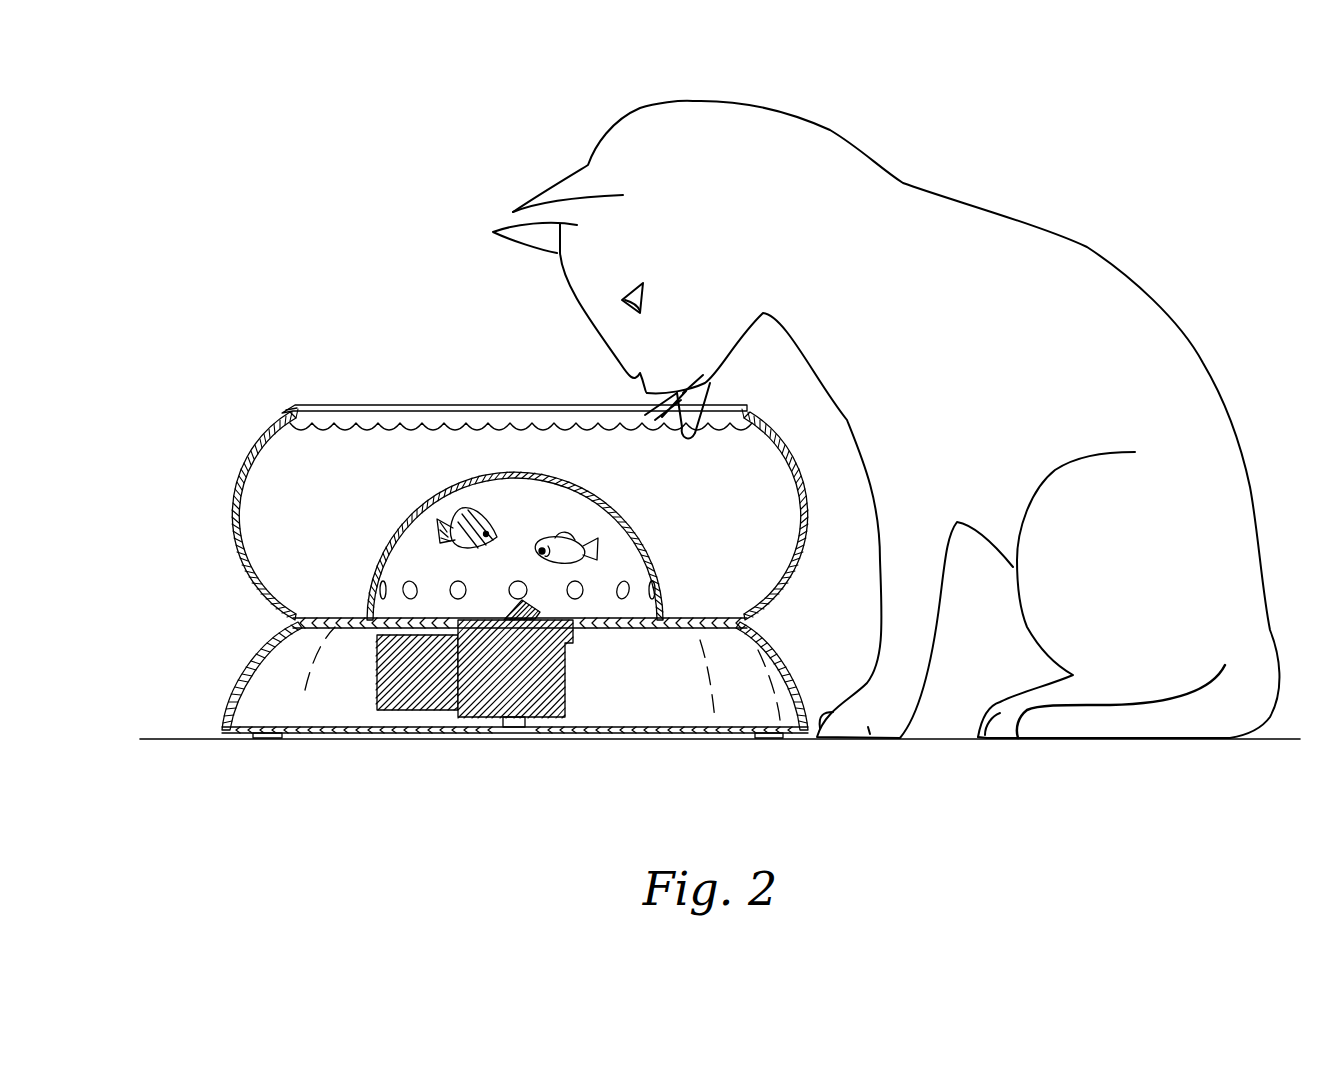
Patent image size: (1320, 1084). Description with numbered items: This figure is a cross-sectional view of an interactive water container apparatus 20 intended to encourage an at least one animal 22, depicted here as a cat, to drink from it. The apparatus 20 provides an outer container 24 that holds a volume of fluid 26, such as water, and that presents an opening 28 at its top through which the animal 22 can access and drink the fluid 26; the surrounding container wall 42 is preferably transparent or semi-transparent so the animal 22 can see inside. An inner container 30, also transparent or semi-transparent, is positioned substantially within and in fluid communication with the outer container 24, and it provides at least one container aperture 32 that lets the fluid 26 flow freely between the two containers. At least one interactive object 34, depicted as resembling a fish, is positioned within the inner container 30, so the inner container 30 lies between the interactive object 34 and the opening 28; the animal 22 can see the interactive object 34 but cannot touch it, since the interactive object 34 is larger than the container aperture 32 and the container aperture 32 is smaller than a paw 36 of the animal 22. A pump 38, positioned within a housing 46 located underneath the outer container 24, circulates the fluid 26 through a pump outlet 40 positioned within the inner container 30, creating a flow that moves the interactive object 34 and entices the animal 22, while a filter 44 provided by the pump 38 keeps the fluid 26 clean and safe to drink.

The interactive water container apparatus 20 is at (387, 295).
The animal 22 is at (990, 193).
The outer container 24 is at (468, 477).
The fluid 26 is at (456, 452).
The opening 28 is at (340, 398).
The inner container 30 is at (518, 524).
The container aperture 32 is at (407, 584).
The interactive object 34 is at (458, 516).
The paw 36 is at (865, 742).
The pump 38 is at (482, 713).
The pump outlet 40 is at (525, 622).
The container wall 42 is at (232, 546).
The filter 44 is at (408, 705).
The housing 46 is at (240, 680).